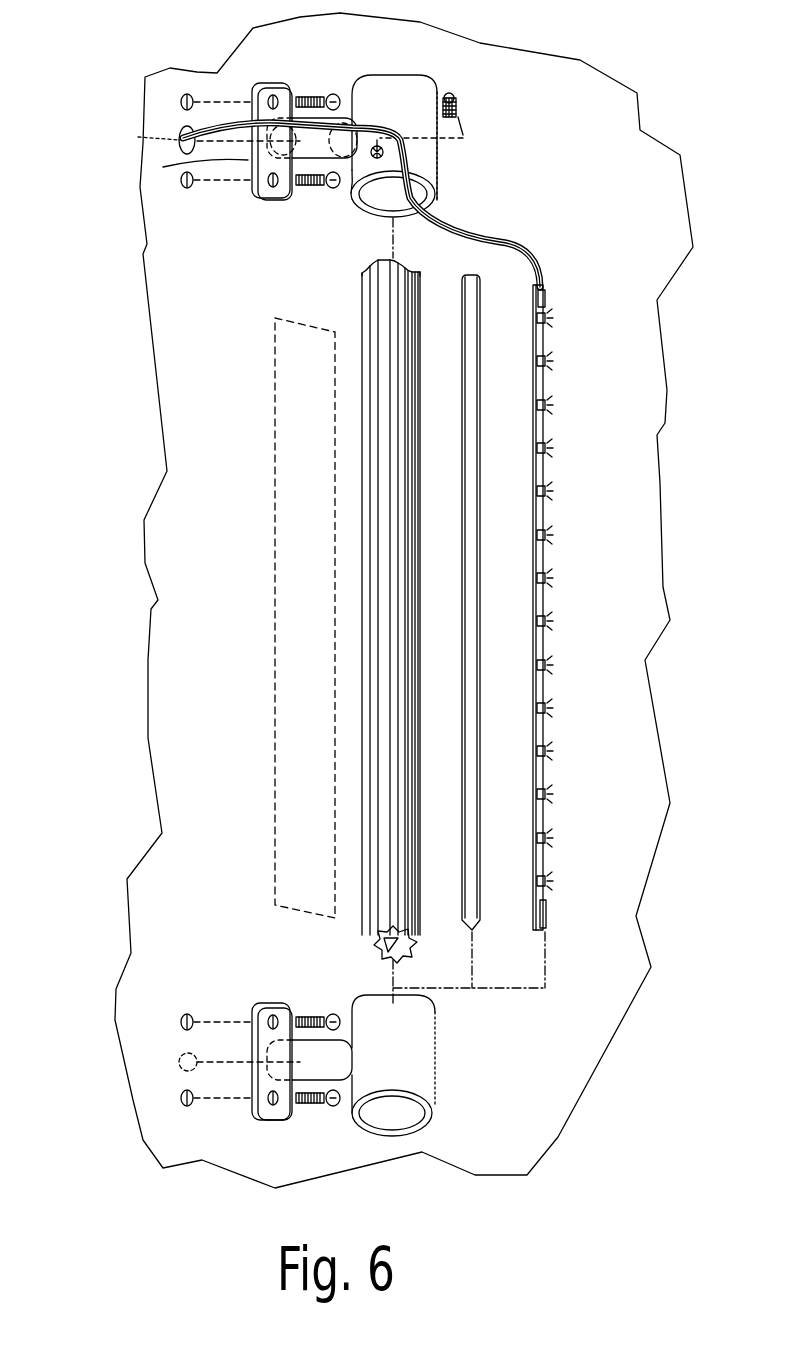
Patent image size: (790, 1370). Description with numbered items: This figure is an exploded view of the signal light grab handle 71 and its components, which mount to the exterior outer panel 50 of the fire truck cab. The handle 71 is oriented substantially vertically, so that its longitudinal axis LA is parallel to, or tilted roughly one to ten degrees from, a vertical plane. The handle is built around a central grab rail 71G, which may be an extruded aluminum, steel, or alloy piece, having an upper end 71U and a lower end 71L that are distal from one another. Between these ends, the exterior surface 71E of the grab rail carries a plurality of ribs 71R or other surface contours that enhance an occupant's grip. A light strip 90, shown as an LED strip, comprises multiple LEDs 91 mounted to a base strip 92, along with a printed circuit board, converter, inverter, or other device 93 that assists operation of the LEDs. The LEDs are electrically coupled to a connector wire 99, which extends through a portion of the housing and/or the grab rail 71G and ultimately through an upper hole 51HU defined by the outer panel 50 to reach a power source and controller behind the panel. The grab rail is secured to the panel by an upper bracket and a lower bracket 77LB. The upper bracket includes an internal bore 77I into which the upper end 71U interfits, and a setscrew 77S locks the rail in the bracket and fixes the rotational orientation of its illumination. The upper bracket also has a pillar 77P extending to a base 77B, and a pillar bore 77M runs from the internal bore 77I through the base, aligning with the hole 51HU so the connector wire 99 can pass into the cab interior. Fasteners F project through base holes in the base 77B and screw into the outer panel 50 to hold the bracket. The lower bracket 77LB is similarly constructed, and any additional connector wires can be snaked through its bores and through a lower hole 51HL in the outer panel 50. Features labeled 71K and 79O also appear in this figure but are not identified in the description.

The exterior outer panel 50 is at (612, 353).
The upper hole 51HU is at (183, 138).
The lower hole 51HL is at (180, 1063).
The base 77B is at (168, 142).
The pillar 77P is at (318, 117).
The fasteners F is at (312, 96).
The pillar bore 77M is at (352, 110).
The setscrew 77S is at (458, 102).
The internal bore 77I is at (420, 194).
The connector wire 99 is at (508, 237).
The signal light grab handle 71 is at (290, 428).
The upper end 71U is at (362, 284).
The lower end 71L is at (410, 946).
The central grab rail 71G is at (362, 622).
The rod key 71K is at (370, 708).
The exterior surface 71E is at (370, 795).
The ribs 71R is at (365, 908).
The outer housing (phantom) 79O is at (268, 578).
The longitudinal axis LA is at (391, 979).
The light strip 90 is at (548, 285).
The LEDs 91 is at (550, 580).
The base strip 92 is at (548, 468).
The printed circuit board, converter, inverter or other device 93 is at (543, 910).
The lower bracket 77LB is at (420, 1068).